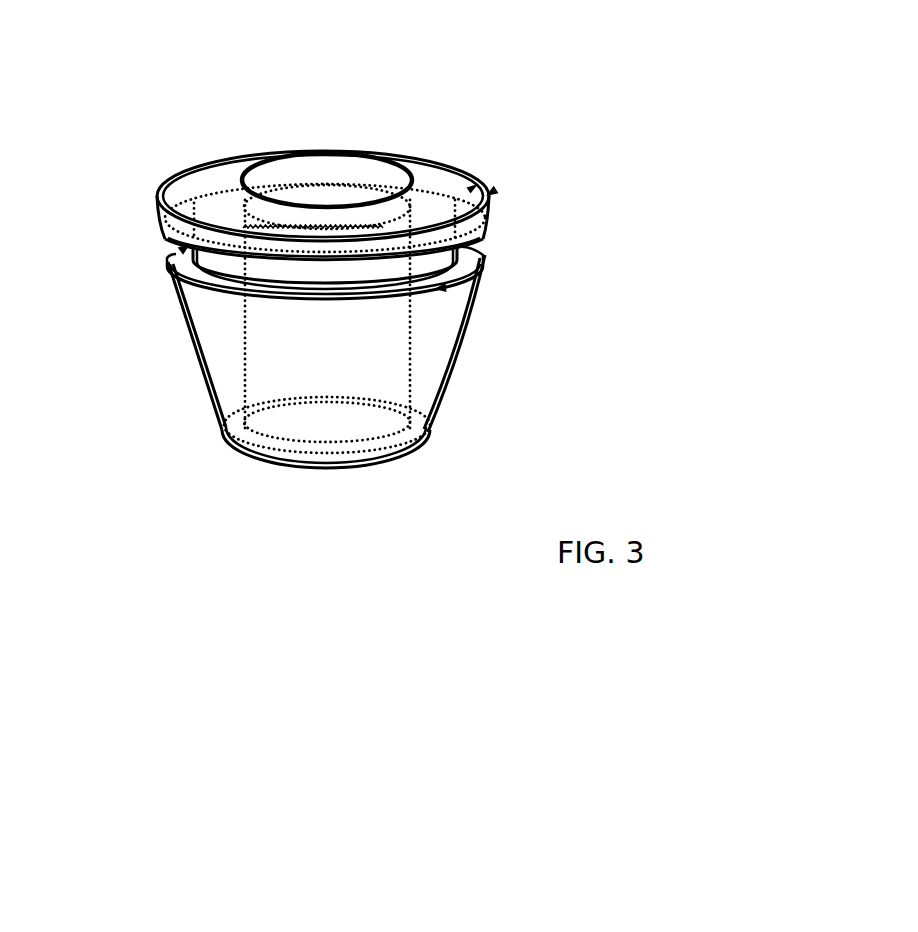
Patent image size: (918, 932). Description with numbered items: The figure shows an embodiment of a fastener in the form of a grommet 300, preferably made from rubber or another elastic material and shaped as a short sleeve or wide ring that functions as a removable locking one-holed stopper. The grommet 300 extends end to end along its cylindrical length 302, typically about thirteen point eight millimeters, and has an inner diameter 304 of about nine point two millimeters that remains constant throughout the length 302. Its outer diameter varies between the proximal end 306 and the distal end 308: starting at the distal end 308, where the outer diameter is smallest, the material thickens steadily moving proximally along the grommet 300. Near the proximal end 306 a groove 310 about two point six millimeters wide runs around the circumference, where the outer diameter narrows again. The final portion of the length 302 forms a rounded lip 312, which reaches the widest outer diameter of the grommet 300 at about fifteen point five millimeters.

The grommet 300 is at (378, 579).
The cylindrical length 302 is at (101, 155).
The inner diameter 304 is at (407, 112).
The proximal end 306 is at (403, 155).
The distal end 308 is at (257, 462).
The groove 310 is at (476, 243).
The rounded lip 312 is at (484, 191).